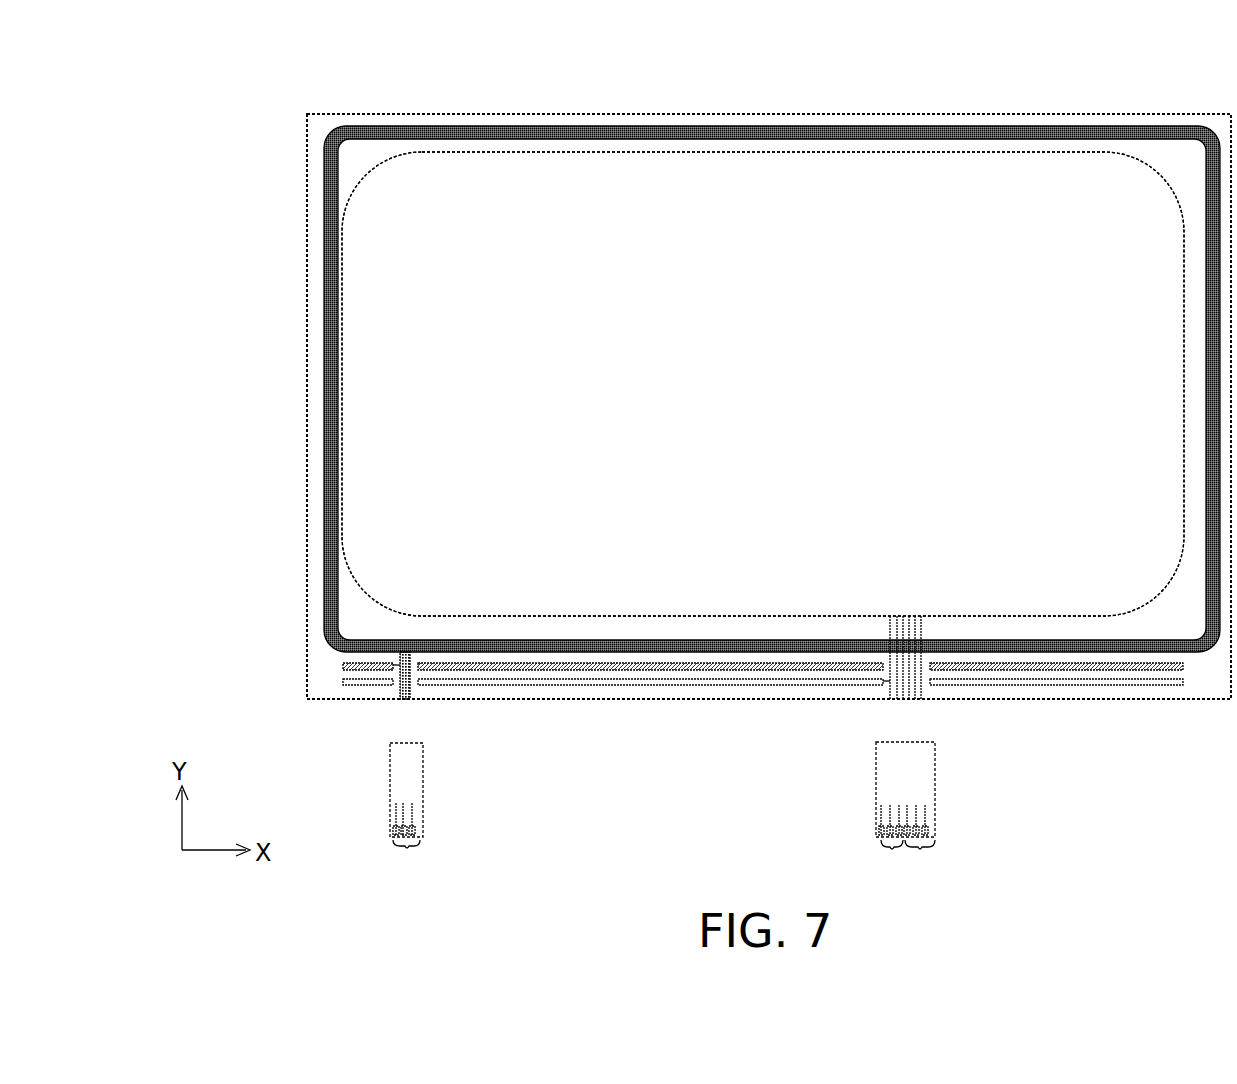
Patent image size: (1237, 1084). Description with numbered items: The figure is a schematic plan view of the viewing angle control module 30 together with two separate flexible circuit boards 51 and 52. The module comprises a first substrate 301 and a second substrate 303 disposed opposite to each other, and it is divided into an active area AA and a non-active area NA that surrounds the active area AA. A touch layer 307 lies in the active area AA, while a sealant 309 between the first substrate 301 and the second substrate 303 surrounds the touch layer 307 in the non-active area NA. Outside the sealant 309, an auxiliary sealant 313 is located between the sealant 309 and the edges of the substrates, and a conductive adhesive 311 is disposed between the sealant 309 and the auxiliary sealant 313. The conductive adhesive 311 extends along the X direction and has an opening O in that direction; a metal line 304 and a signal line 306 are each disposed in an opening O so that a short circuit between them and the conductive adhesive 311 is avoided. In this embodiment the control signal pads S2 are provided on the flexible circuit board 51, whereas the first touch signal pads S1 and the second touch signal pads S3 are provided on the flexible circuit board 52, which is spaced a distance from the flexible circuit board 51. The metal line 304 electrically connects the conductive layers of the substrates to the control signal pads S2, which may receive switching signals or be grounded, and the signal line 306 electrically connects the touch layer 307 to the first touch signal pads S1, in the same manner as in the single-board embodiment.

The viewing angle control module 30 is at (274, 77).
The first substrate 301 is at (307, 493).
The second substrate 303 is at (1207, 700).
The metal line 304 is at (398, 681).
The signal line 306 is at (928, 676).
The touch layer 307 is at (440, 305).
The sealant 309 is at (332, 385).
The conductive adhesive 311 is at (735, 670).
The auxiliary sealant 313 is at (607, 685).
The non-active area NA is at (317, 245).
The active area AA is at (786, 395).
The opening O is at (393, 663).
The flexible circuit board 51 is at (416, 770).
The flexible circuit board 52 is at (885, 782).
The first touch signal pads S1 is at (920, 859).
The control signal pads S2 is at (408, 859).
The second touch signal pads S3 is at (893, 851).